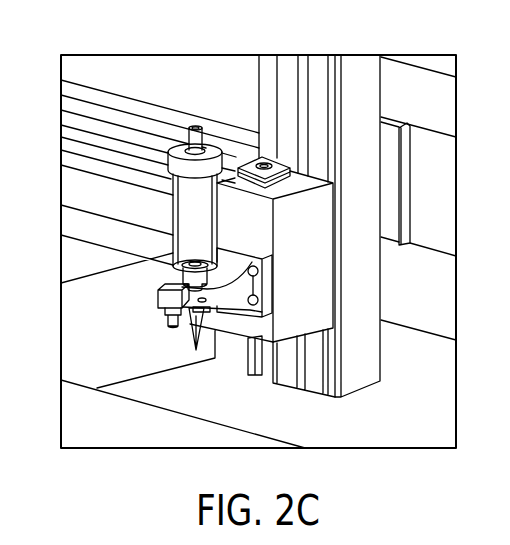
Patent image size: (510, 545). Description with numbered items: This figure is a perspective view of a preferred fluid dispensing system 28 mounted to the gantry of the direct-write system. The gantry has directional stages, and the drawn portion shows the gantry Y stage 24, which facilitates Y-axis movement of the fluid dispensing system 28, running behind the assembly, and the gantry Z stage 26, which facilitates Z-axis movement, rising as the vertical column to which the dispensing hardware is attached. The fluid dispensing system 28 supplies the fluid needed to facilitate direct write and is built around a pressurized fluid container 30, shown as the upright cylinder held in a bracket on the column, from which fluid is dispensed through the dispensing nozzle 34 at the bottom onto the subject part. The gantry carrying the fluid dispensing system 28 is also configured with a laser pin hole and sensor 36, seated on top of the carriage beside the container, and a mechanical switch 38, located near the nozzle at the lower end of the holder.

The gantry Y stage 24 is at (97, 98).
The gantry Z stage 26 is at (288, 60).
The fluid dispensing system 28 is at (167, 215).
The pressurized fluid container 30 is at (182, 190).
The dispensing nozzle 34 is at (193, 337).
The laser pin hole and sensor 36 is at (263, 163).
The mechanical switch 38 is at (167, 317).